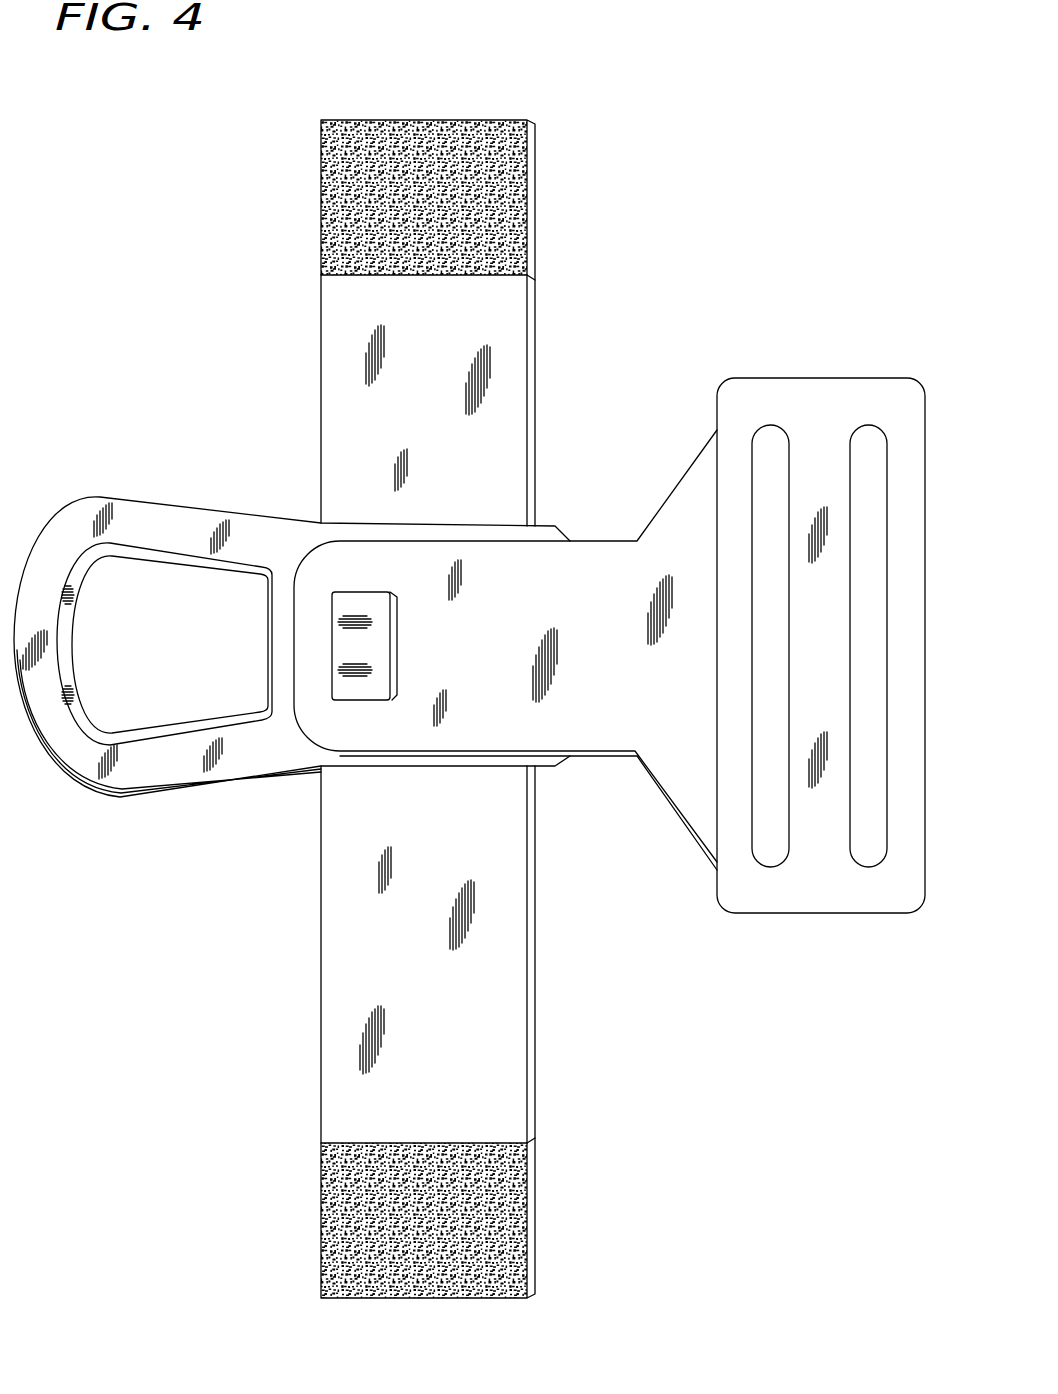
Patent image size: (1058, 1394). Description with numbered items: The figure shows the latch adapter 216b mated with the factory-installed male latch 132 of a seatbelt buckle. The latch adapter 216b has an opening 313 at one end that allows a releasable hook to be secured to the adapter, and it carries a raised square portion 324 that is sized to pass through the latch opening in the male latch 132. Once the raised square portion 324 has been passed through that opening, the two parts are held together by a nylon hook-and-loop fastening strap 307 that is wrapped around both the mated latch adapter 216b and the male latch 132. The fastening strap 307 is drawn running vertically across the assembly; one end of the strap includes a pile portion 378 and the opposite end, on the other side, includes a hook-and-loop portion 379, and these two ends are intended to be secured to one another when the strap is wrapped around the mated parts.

The factory-installed male latch 132 is at (606, 555).
The latch adapter 216b is at (158, 795).
The hook-and-loop fastening strap 307 is at (340, 921).
The opening 313 is at (176, 659).
The raised square portion 324 is at (382, 650).
The pile portion 378 is at (340, 1203).
The hook-and-loop portion 379 is at (340, 184).